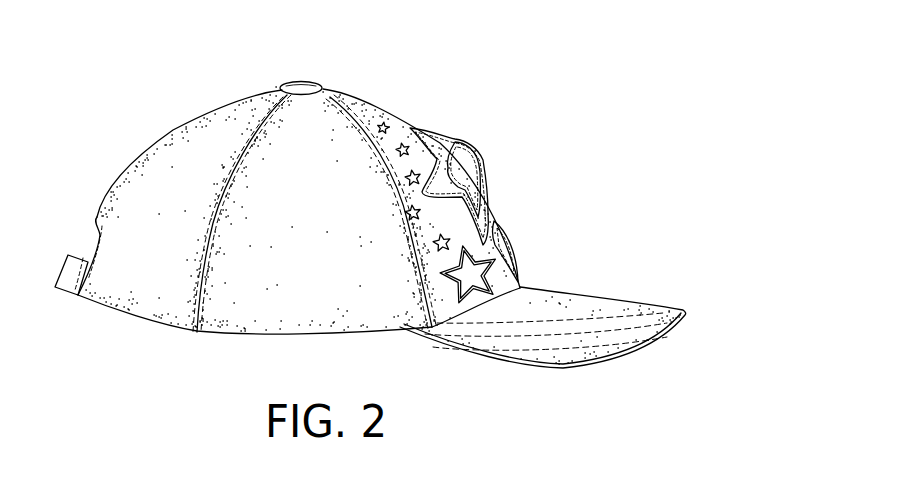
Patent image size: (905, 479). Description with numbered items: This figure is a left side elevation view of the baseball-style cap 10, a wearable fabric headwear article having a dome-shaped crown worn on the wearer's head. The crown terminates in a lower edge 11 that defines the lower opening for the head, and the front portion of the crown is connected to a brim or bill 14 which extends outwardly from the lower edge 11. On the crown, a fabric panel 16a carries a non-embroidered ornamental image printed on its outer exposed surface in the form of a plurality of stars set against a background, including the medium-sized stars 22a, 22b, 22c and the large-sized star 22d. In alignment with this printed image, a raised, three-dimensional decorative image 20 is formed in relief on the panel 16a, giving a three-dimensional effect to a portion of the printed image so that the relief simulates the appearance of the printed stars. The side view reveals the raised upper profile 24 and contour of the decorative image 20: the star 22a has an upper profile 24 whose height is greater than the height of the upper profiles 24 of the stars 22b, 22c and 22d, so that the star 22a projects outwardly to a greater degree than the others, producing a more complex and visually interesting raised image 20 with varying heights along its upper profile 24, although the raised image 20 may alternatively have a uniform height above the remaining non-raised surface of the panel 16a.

The cap 10 is at (155, 125).
The lower edge 11 is at (128, 313).
The bill 14 is at (585, 343).
The fabric panel 16a is at (395, 140).
The raised three-dimensional decorative image 20 is at (525, 140).
The medium-sized star 22a is at (479, 216).
The medium-sized star 22b is at (477, 277).
The medium-sized star 22c is at (500, 256).
The large-sized star 22d is at (428, 130).
The upper profile 24 is at (483, 165).